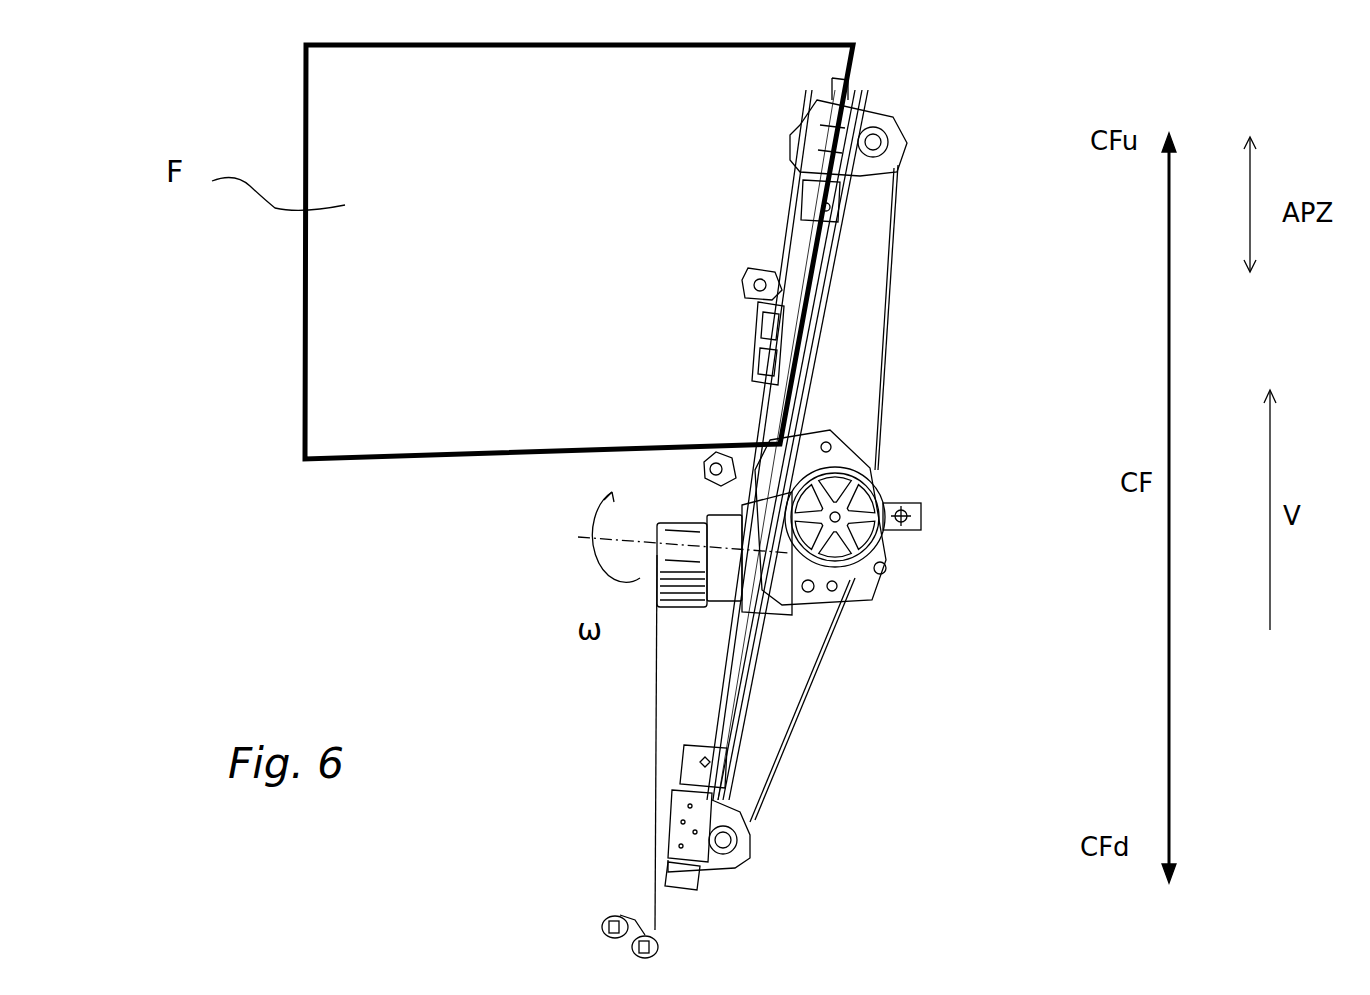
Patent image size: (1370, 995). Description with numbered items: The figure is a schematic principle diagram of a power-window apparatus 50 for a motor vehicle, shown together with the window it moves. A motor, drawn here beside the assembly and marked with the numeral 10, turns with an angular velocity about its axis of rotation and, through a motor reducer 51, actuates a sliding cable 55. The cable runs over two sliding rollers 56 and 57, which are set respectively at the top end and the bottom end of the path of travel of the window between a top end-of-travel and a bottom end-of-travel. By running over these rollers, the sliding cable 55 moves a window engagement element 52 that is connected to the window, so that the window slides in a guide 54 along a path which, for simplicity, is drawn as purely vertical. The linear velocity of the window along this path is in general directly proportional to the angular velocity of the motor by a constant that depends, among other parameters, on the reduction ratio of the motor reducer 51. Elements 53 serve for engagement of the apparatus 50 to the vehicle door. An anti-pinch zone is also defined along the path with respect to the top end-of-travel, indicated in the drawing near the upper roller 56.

The drive motor 10 is at (703, 603).
The power-window apparatus 50 is at (333, 612).
The motor reducer 51 is at (888, 545).
The window engagement element 52 is at (757, 340).
The engagement elements 53 is at (748, 282).
The guide 54 is at (822, 340).
The sliding cable 55 is at (892, 294).
The sliding roller 56 is at (910, 150).
The sliding roller 57 is at (755, 853).